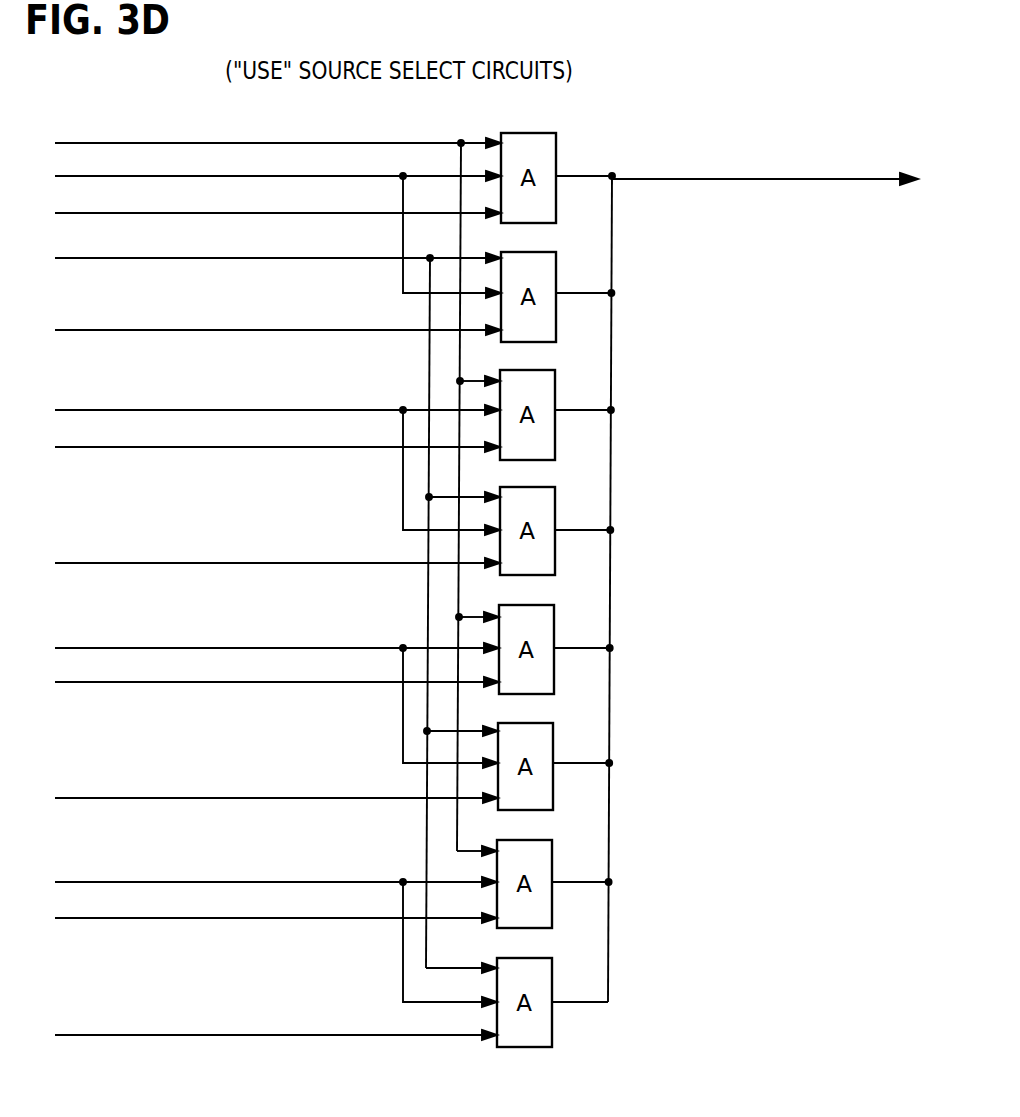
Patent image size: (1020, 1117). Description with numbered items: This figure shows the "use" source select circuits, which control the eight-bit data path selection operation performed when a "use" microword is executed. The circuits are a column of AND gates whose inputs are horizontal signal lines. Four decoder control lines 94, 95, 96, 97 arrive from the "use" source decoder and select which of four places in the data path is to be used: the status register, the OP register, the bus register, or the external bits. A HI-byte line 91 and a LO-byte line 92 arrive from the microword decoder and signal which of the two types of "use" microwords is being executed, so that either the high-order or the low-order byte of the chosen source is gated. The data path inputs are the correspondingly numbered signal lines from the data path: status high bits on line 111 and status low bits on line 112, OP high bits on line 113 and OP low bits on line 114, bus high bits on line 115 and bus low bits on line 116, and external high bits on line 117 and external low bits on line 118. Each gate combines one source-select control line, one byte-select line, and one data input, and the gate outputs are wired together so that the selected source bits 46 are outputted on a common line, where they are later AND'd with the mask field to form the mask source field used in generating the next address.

The selected source bits 46 is at (857, 181).
The HI-byte line 91 is at (320, 143).
The LO-byte line 92 is at (310, 258).
The decoder control line 94 is at (288, 176).
The decoder control line 95 is at (250, 410).
The decoder control line 96 is at (277, 648).
The decoder control line 97 is at (330, 882).
The data path input line 111 is at (360, 213).
The data path input line 112 is at (327, 330).
The data path input line 113 is at (335, 447).
The data path input line 114 is at (333, 563).
The data path input line 115 is at (333, 682).
The data path input line 116 is at (327, 798).
The data path input line 117 is at (325, 918).
The data path input line 118 is at (345, 1035).